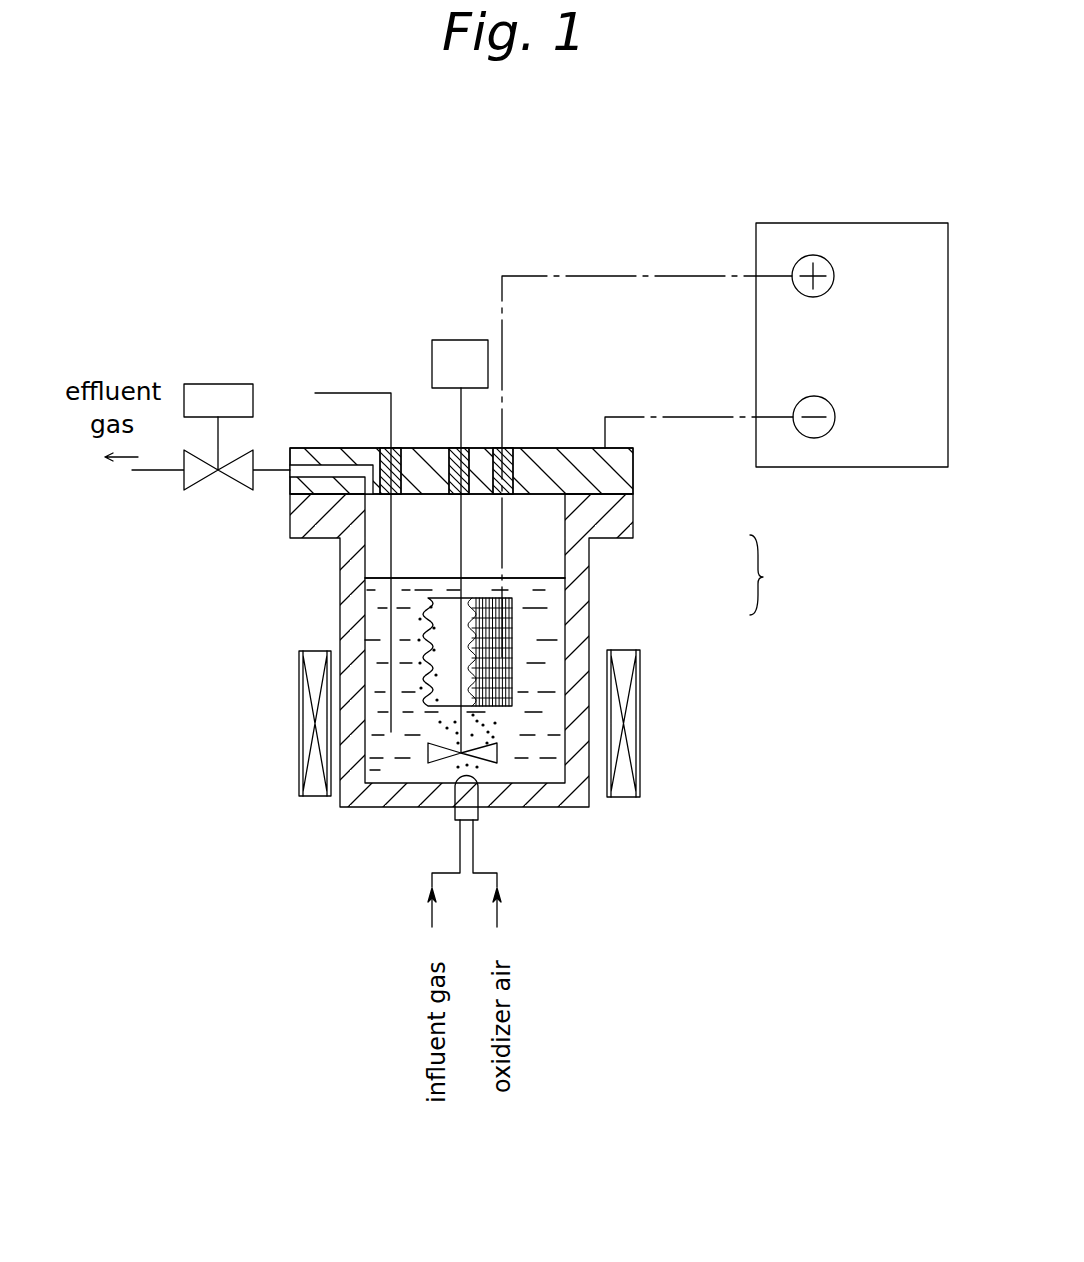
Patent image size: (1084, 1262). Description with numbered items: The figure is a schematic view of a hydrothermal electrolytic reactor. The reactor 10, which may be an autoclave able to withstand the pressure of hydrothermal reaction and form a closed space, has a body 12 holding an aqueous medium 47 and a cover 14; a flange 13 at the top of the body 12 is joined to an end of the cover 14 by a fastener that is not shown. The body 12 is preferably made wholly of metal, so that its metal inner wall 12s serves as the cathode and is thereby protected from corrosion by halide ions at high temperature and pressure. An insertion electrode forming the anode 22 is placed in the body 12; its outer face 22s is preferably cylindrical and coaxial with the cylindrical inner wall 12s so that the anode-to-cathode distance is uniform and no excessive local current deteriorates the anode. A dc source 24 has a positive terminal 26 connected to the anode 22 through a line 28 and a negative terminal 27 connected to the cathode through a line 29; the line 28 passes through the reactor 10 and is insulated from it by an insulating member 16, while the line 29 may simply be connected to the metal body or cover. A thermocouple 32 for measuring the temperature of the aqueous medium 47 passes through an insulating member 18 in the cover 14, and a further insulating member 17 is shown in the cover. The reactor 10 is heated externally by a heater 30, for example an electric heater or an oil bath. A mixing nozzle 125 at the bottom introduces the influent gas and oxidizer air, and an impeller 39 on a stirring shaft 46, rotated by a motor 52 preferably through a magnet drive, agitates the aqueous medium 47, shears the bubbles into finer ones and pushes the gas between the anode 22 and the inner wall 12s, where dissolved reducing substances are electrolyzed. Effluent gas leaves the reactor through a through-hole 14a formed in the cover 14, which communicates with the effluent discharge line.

The reactor 10 is at (772, 575).
The body 12 is at (590, 602).
The inner wall 12s is at (555, 600).
The flange 13 is at (625, 505).
The cover 14 is at (632, 472).
The through-hole 14a is at (303, 471).
The insulating member 16 is at (510, 448).
The shaft bushing 17 is at (462, 448).
The insulating member 18 is at (392, 448).
The anode 22 is at (468, 652).
The outer face of anode 22s is at (507, 627).
The dc source 24 is at (914, 223).
The positive terminal 26 is at (802, 258).
The negative terminal 27 is at (802, 400).
The line 28 is at (568, 276).
The line 29 is at (642, 417).
The heater 30 is at (299, 731).
The thermocouple 32 is at (355, 393).
The impeller 39 is at (497, 757).
The stirring shaft 46 is at (460, 547).
The aqueous medium 47 is at (381, 771).
The motor 52 is at (446, 340).
The mixing nozzle 125 is at (457, 814).